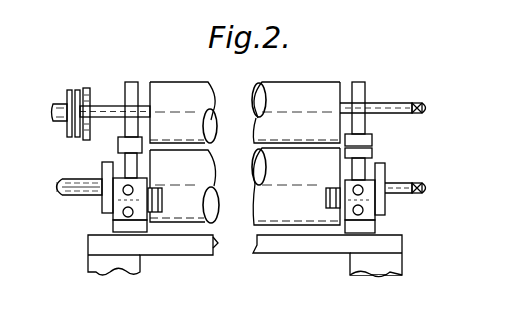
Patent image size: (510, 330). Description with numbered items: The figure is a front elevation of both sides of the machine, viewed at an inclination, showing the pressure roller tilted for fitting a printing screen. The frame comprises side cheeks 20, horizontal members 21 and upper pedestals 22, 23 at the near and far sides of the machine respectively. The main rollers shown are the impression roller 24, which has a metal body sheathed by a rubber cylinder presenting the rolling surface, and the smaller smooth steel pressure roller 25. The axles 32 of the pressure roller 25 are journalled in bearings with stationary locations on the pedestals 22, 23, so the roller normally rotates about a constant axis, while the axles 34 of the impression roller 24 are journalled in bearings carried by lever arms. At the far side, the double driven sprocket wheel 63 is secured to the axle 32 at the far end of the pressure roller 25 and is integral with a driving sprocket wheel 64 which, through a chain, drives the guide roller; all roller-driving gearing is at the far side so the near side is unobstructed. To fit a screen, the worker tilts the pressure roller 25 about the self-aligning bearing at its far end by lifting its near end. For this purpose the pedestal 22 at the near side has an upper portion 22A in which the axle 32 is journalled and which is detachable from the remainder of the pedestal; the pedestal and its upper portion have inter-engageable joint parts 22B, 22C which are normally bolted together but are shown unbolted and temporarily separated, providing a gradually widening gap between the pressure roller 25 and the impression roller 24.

The side cheeks 20 is at (127, 258).
The horizontal members 21 is at (195, 253).
The upper pedestal 22 is at (376, 227).
The upper portion 22A is at (358, 82).
The joint part 22B is at (372, 153).
The joint part 22C is at (372, 140).
The upper pedestal 23 is at (122, 226).
The impression roller 24 is at (213, 240).
The pressure roller 25 is at (158, 90).
The axles 32 is at (108, 106).
The axles 34 is at (62, 192).
The driven sprocket wheel 63 is at (69, 90).
The driving sprocket wheel 64 is at (86, 89).